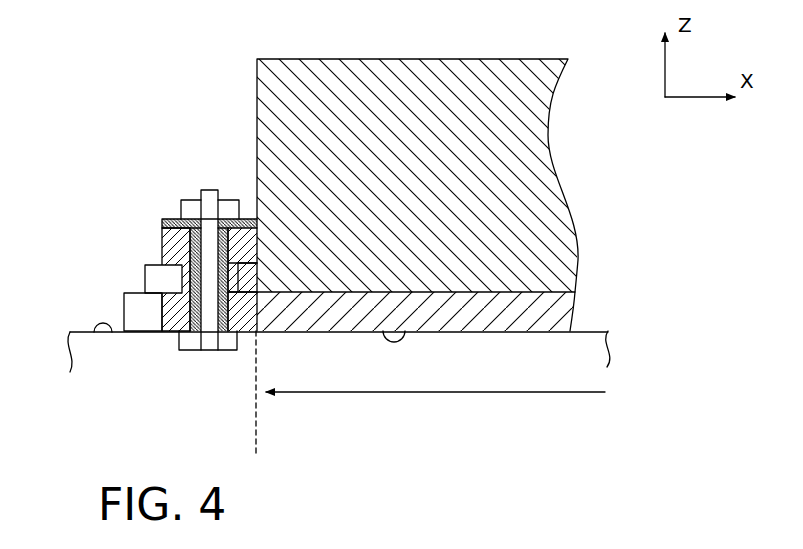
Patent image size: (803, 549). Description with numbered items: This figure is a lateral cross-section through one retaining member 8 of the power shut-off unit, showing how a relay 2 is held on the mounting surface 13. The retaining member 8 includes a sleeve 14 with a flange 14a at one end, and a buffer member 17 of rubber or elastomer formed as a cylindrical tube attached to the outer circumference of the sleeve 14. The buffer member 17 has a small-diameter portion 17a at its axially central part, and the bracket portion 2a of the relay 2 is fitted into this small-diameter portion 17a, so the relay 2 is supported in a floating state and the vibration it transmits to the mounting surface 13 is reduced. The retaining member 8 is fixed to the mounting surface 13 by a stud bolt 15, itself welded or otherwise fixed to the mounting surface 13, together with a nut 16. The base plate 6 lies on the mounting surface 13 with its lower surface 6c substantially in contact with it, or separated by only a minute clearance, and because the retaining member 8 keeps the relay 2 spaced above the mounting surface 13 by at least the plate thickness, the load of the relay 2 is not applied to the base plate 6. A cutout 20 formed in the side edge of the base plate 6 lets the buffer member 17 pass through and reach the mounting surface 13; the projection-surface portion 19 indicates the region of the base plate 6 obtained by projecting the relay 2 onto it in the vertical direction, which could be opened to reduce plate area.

The relay 2 is at (383, 70).
The bracket portion 2a is at (158, 281).
The base plate 6 is at (457, 323).
The lower surface 6c is at (405, 330).
The retaining member 8 is at (130, 117).
The mounting surface 13 is at (95, 334).
The sleeve 14 is at (183, 251).
The flange 14a is at (173, 220).
The stud bolt 15 is at (208, 200).
The nut 16 is at (195, 207).
The buffer member 17 is at (160, 253).
The small-diameter portion 17a is at (147, 272).
The projection-surface portion 19 is at (435, 407).
The cutout 20 is at (257, 342).